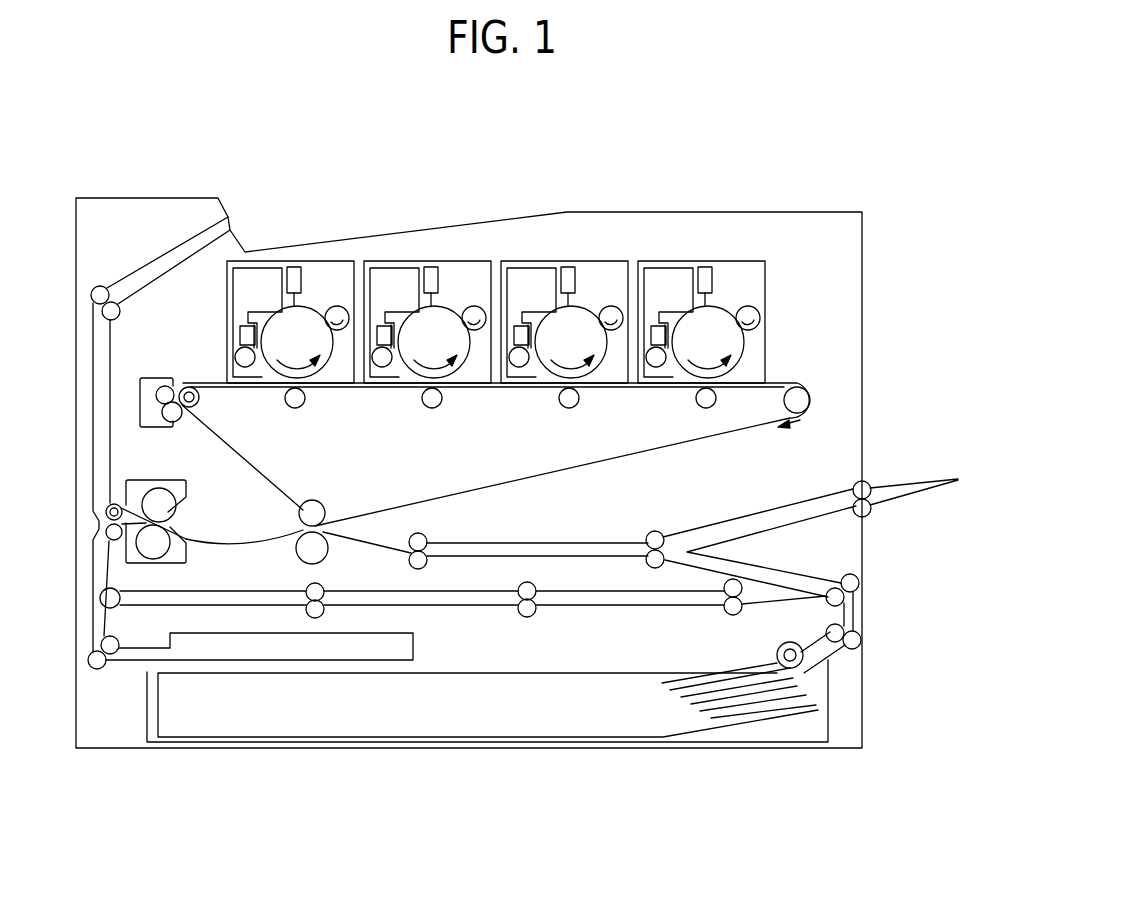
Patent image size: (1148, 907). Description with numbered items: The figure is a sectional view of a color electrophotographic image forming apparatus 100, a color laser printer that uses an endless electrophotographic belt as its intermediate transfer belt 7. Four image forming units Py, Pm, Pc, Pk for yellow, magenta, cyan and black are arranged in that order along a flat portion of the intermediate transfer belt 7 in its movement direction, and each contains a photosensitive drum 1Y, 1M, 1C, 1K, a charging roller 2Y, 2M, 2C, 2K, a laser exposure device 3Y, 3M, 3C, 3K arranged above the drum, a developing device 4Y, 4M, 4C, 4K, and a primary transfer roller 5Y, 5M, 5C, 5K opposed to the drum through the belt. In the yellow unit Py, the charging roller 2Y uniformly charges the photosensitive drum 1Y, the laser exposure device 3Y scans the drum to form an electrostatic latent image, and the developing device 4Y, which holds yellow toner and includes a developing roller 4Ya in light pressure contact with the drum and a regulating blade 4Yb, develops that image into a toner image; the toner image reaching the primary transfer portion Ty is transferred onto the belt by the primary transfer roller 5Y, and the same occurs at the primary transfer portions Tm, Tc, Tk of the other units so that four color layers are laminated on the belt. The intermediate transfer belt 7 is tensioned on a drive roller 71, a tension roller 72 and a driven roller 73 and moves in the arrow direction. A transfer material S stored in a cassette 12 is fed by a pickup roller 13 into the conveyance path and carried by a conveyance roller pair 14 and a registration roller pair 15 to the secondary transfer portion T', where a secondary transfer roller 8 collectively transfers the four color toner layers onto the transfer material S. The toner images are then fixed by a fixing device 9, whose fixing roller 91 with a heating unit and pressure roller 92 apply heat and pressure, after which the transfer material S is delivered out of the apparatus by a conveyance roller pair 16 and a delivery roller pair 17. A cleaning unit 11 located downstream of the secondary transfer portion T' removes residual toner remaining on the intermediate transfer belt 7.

The electrophotographic image forming apparatus 100 is at (747, 197).
The delivery roller pair 17 is at (120, 311).
The conveyance roller pair 16 is at (107, 510).
The fixing device 9 is at (176, 508).
The fixing roller 91 is at (166, 498).
The pressure roller 92 is at (165, 548).
The cleaning unit 11 is at (157, 378).
The intermediate transfer belt 7 is at (578, 470).
The drive roller 71 is at (199, 404).
The tension roller 72 is at (806, 412).
The driven roller 73 is at (316, 506).
The secondary transfer roller 8 is at (302, 556).
The secondary transfer portion T' is at (360, 527).
The registration roller pair 15 is at (425, 537).
The pickup roller 13 is at (777, 650).
The conveyance roller pair 14 is at (860, 647).
The cassette 12 is at (805, 737).
The transfer material S is at (684, 690).
The yellow image forming unit Py is at (283, 258).
The magenta image forming unit Pm is at (413, 258).
The cyan image forming unit Pc is at (551, 257).
The black image forming unit Pk is at (684, 256).
The photosensitive drum 1Y is at (316, 370).
The photosensitive drum 1M is at (454, 370).
The photosensitive drum 1C is at (590, 370).
The photosensitive drum 1K is at (724, 370).
The charging roller 2Y is at (338, 306).
The charging roller 2M is at (476, 306).
The charging roller 2C is at (613, 306).
The charging roller 2K is at (750, 306).
The laser exposure device 3Y is at (299, 267).
The laser exposure device 3M is at (437, 267).
The laser exposure device 3C is at (575, 267).
The laser exposure device 3K is at (712, 267).
The developing device 4Y is at (235, 325).
The regulating blade 4Yb is at (247, 330).
The developing roller 4Ya is at (235, 357).
The developing device 4M is at (377, 386).
The developing device 4C is at (515, 386).
The developing device 4K is at (650, 386).
The primary transfer roller 5Y is at (296, 408).
The primary transfer roller 5M is at (433, 408).
The primary transfer roller 5C is at (570, 408).
The primary transfer roller 5K is at (708, 410).
The primary transfer portion Ty is at (284, 387).
The primary transfer portion Tm is at (424, 387).
The primary transfer portion Tc is at (561, 387).
The primary transfer portion Tk is at (700, 387).